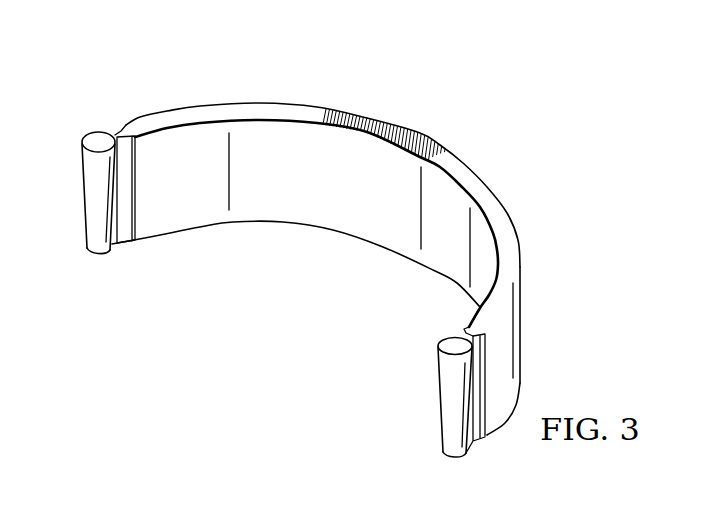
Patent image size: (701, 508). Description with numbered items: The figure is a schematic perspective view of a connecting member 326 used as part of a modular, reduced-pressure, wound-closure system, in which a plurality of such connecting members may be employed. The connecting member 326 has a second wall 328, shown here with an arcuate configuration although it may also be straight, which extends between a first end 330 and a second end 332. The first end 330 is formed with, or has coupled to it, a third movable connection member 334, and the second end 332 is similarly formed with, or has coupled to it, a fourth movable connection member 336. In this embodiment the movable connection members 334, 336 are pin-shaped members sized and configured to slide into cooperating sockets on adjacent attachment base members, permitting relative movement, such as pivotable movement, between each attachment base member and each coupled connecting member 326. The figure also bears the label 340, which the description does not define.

The first connecting member 326 is at (465, 100).
The second wall 328 is at (521, 325).
The first end 330 is at (85, 193).
The second end 332 is at (440, 397).
The third movable connection member 334 is at (97, 256).
The fourth movable connection member 336 is at (447, 460).
The pin / connector 340 is at (155, 500).